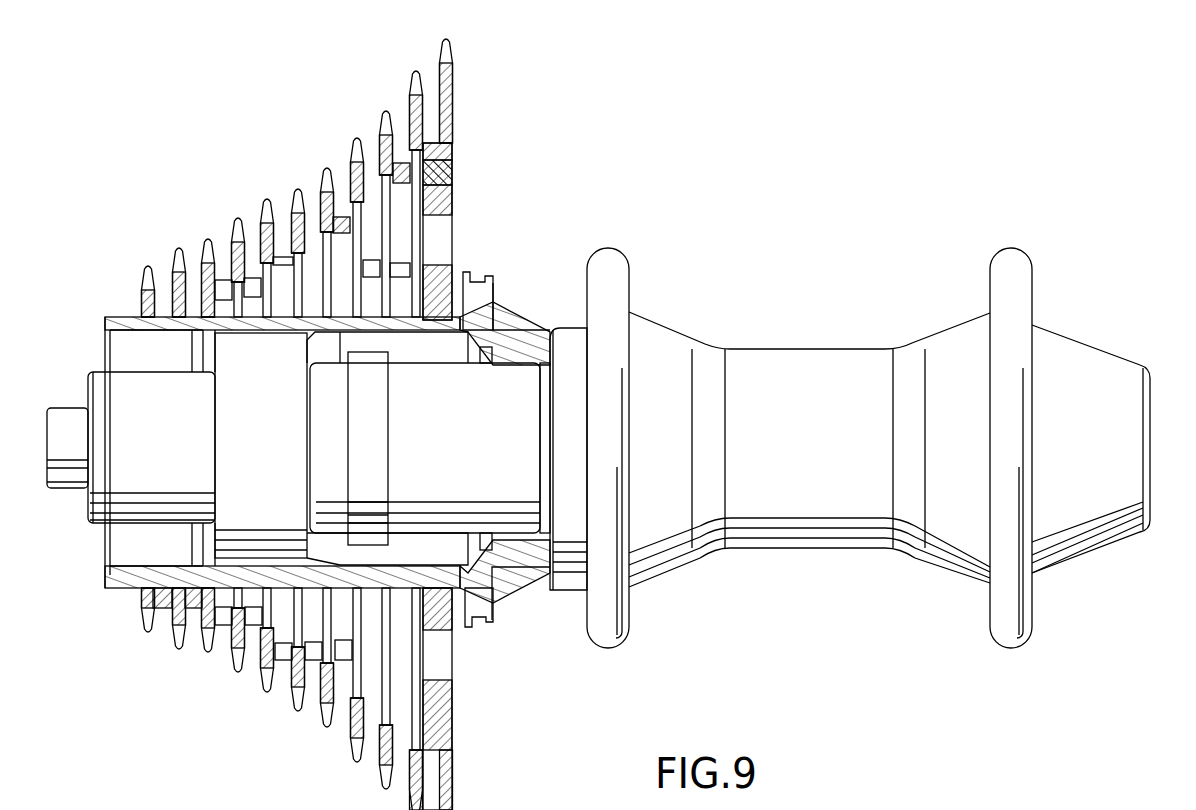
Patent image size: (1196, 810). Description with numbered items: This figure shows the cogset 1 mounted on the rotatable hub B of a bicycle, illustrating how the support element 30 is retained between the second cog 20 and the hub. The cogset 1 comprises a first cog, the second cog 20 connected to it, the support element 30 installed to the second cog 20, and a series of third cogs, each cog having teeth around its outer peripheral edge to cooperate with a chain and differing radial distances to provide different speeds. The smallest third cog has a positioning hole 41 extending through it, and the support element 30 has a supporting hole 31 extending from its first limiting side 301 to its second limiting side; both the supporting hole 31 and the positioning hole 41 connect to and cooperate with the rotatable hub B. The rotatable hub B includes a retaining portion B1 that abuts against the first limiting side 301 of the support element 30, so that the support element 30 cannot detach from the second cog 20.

The cogset 1 is at (193, 183).
The second cog 20 is at (413, 90).
The support element 30 is at (440, 197).
The supporting hole 31 is at (456, 328).
The positioning hole 41 is at (153, 323).
The first limiting side 301 is at (478, 602).
The rotatable hub B is at (797, 262).
The retaining portion B1 is at (423, 628).